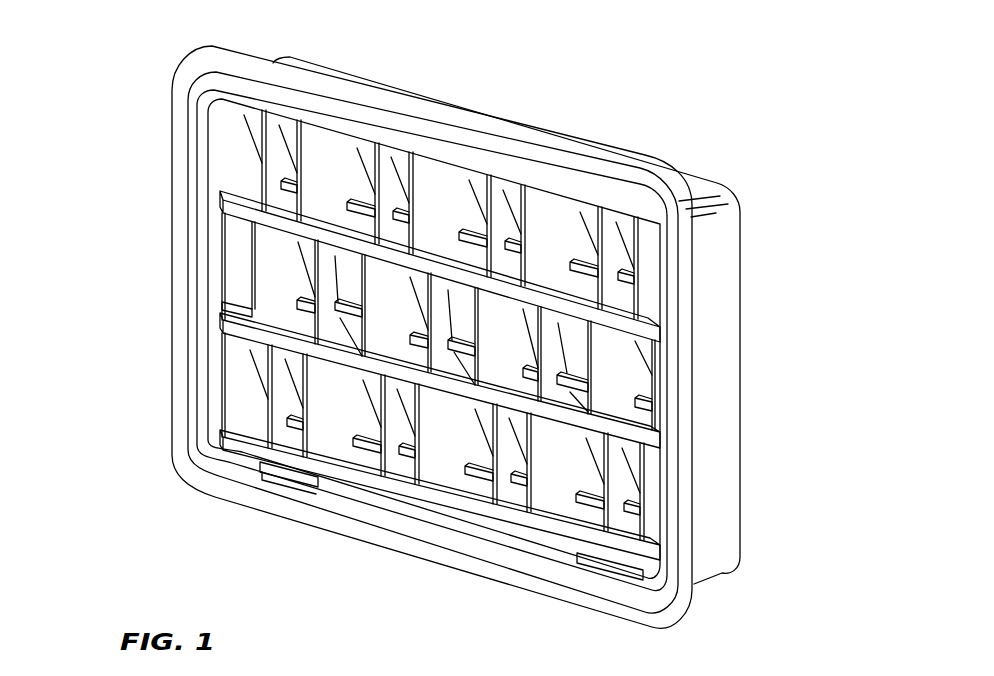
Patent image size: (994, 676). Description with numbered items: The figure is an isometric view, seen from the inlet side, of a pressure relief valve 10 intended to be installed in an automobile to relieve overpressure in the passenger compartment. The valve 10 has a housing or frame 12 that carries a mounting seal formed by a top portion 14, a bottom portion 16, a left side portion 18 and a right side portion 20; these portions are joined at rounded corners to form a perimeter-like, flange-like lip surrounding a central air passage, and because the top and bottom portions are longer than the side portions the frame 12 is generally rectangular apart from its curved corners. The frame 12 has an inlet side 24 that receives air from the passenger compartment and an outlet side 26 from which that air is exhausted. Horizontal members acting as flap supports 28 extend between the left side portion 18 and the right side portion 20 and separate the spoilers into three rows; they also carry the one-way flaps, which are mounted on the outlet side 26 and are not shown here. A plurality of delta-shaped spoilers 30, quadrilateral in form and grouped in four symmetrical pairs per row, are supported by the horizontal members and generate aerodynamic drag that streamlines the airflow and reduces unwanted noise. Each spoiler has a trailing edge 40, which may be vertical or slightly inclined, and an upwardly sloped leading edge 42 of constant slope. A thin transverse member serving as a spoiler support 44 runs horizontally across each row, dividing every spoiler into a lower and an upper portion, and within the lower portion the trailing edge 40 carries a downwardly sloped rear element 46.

The pressure relief valve 10 is at (77, 0).
The housing or frame 12 is at (730, 210).
The top portion of mounting seal 14 is at (534, 160).
The bottom portion of mounting seal 16 is at (482, 568).
The left side portion of mounting seal 18 is at (180, 228).
The right side portion of mounting seal 20 is at (680, 437).
The inlet side 24 is at (237, 519).
The outlet side 26 is at (678, 128).
The flap supports 28 is at (227, 207).
The delta-shaped spoilers 30 is at (389, 165).
The trailing edge 40 is at (420, 168).
The leading edge 42 is at (577, 213).
The spoiler supports 44 is at (483, 228).
The downwardly sloped rear element 46 is at (404, 485).